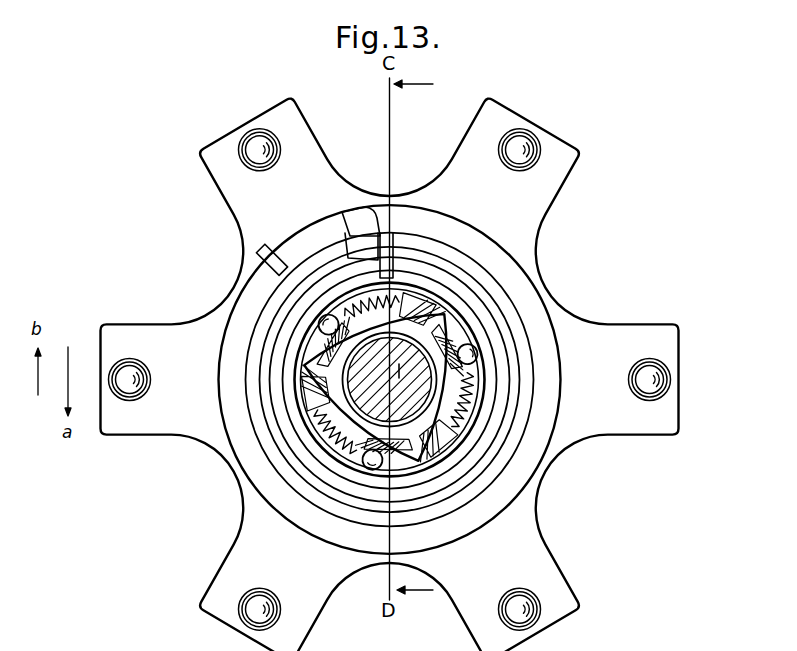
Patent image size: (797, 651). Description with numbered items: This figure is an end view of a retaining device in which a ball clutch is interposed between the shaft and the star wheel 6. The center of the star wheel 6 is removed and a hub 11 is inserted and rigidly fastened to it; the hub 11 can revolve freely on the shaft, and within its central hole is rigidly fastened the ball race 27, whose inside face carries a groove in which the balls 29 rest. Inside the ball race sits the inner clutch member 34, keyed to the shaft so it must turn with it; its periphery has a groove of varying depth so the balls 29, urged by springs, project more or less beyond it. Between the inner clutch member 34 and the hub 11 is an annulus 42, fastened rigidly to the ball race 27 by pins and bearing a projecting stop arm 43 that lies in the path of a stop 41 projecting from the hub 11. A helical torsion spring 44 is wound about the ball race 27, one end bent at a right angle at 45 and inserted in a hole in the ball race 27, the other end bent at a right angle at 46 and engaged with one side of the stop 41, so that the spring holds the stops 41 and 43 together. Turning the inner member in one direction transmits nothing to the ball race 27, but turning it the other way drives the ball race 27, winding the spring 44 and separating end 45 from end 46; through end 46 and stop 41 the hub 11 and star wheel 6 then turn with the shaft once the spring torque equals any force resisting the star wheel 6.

The star wheel 6 is at (538, 530).
The hub member 11 is at (534, 315).
The ball race 27 is at (480, 384).
The balls 29 is at (366, 463).
The inner clutch member 34 is at (455, 336).
The stop 41 is at (291, 244).
The annulus 42 is at (498, 377).
The stop arm 43 is at (365, 212).
The helical torsion spring 44 is at (526, 355).
The spring end 45 is at (392, 266).
The spring end 46 is at (260, 258).